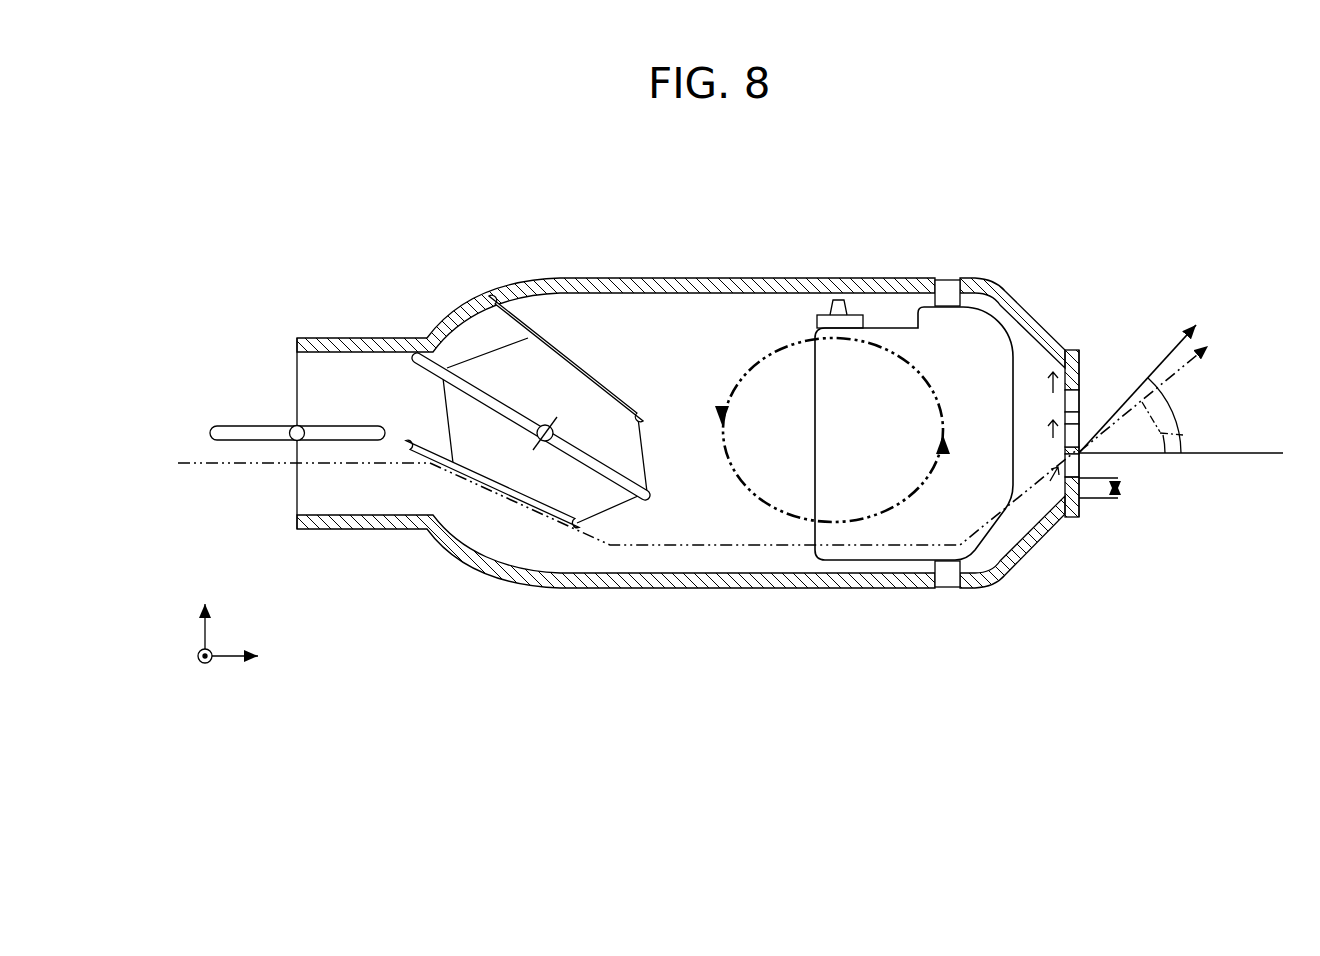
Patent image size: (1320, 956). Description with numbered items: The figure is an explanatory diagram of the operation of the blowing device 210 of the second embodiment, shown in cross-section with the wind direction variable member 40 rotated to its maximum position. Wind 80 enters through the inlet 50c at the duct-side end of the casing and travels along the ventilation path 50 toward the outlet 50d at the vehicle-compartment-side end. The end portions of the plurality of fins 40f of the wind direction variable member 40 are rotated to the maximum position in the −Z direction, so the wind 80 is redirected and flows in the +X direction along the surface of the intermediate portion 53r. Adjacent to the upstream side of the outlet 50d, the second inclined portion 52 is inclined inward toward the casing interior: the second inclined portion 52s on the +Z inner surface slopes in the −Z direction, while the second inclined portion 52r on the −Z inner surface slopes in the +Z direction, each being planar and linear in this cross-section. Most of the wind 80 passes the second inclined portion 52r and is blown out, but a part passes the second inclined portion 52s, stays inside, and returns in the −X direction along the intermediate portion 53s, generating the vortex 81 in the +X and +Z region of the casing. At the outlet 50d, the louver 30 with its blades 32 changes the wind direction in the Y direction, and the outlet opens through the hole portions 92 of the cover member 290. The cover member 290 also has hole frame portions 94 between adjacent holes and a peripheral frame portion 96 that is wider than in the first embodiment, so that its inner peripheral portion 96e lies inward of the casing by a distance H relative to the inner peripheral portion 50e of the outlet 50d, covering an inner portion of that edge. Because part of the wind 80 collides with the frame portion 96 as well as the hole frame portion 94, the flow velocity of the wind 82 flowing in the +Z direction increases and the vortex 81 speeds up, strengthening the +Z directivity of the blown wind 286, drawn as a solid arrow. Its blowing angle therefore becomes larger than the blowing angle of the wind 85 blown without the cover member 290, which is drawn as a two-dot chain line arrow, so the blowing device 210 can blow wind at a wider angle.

The blowing device 210 is at (938, 218).
The ventilation path 50 is at (723, 330).
The inlet 50c is at (278, 355).
The outlet 50d is at (1081, 440).
The inner peripheral portion of the outlet 50e is at (1063, 496).
The intermediate portion 53s is at (884, 298).
The intermediate portion 53r is at (762, 573).
The second inclined portion 52 is at (1018, 524).
The second inclined portion 52r is at (1012, 542).
The second inclined portion 52s is at (1071, 350).
The louver 30 is at (996, 308).
The blade 32 is at (996, 370).
The wind 80 is at (198, 465).
The vortex 81 is at (793, 338).
The wind 82 is at (1052, 476).
The wind 85 is at (1212, 350).
The wind direction variable member 40 is at (505, 507).
The fin 40f is at (531, 426).
The hole portion 92 is at (1086, 422).
The hole frame portion 94 is at (1068, 406).
The frame portion 96 is at (1079, 508).
The inner peripheral portion of the frame portion 96e is at (1080, 462).
The blown wind 286 is at (1197, 340).
The cover member 290 is at (1078, 388).
The distance H is at (1118, 488).